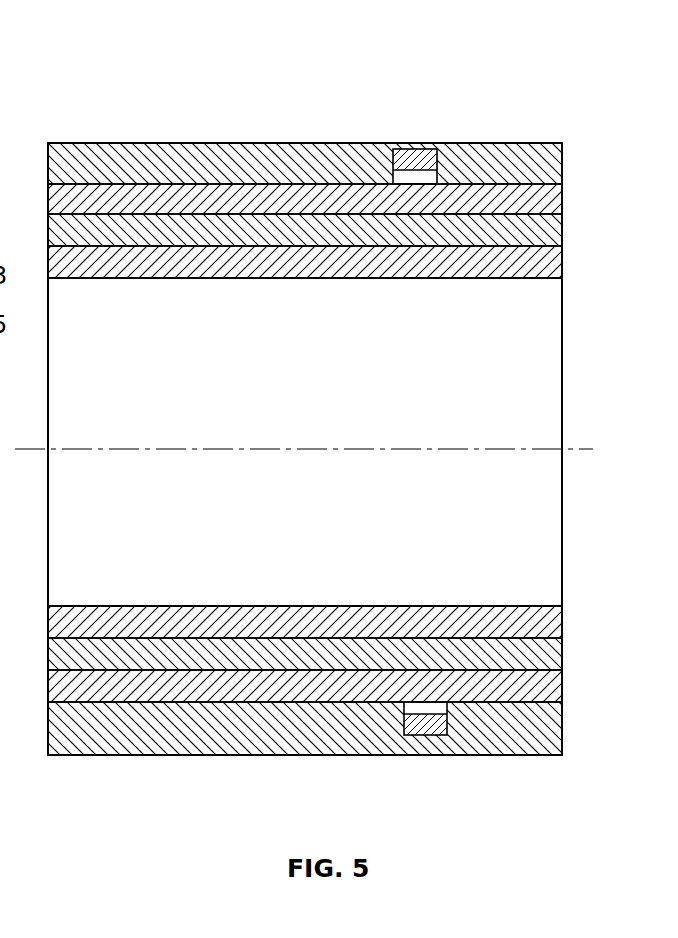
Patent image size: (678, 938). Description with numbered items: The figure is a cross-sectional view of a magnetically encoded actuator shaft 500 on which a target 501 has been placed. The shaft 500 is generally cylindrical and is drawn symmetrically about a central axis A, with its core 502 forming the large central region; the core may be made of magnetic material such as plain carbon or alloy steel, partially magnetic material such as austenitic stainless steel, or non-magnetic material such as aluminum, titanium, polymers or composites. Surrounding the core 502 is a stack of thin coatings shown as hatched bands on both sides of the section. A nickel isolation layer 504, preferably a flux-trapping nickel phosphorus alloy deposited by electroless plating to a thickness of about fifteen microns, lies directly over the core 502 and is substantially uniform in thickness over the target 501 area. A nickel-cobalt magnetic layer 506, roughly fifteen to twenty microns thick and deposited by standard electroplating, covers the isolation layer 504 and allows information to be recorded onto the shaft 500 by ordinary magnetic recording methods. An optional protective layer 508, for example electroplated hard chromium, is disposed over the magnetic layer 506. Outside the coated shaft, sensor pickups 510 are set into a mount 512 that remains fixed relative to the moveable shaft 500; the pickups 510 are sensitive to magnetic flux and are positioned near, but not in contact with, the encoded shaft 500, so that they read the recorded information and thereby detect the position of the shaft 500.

The actuator shaft 500 is at (93, 75).
The target 501 is at (150, 703).
The core 502 is at (552, 340).
The nickel isolation layer 504 is at (548, 267).
The nickel-cobalt magnetic layer 506 is at (548, 232).
The protective layer 508 is at (547, 197).
The sensor pickups 510 is at (412, 158).
The mount 512 is at (490, 158).
The central axis A is at (583, 450).